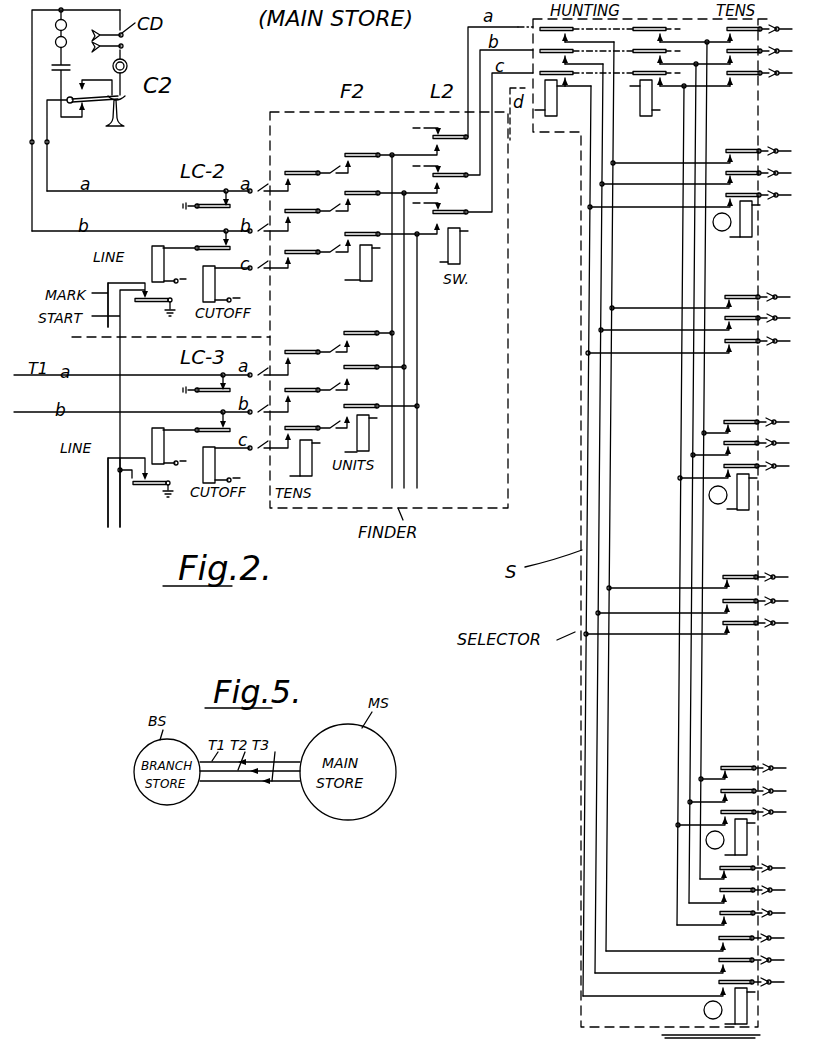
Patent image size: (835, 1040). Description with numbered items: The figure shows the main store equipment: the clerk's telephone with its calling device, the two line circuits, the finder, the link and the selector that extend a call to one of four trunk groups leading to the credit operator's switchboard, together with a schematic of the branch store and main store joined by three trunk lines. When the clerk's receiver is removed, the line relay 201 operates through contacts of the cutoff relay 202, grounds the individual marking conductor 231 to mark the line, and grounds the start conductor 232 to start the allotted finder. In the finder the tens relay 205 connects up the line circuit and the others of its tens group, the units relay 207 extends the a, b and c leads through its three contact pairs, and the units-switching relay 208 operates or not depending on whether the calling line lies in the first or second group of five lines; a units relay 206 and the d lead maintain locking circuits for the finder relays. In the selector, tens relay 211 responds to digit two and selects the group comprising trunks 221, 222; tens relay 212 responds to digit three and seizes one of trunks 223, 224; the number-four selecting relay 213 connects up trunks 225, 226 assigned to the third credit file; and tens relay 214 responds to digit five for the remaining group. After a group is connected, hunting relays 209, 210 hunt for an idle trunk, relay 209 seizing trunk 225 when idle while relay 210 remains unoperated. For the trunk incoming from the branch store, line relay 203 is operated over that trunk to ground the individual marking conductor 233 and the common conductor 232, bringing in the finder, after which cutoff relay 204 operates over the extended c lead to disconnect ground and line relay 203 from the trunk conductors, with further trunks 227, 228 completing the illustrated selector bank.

The line relay 201 is at (152, 270).
The cutoff relay 202 is at (203, 280).
The line relay 203 is at (152, 428).
The cutoff relay 204 is at (203, 462).
The tens relay 205 is at (312, 476).
The units relay 206 is at (363, 440).
The units relay 207 is at (360, 262).
The units-switching relay 208 is at (460, 250).
The hunting relay 209 is at (565, 120).
The hunting relay 210 is at (648, 112).
The tens relay 211 is at (742, 237).
The tens relay 212 is at (740, 509).
The tens relay 213 is at (735, 848).
The tens relay 214 is at (735, 1018).
The trunk 221 is at (789, 27).
The trunk 222 is at (790, 148).
The trunk 223 is at (790, 293).
The trunk 224 is at (790, 419).
The trunk 225 is at (690, 602).
The trunk 226 is at (788, 763).
The selector contact set 227 is at (788, 863).
The selector contact set 228 is at (788, 933).
The individual marking conductor 231 is at (108, 323).
The start conductor 232 is at (120, 378).
The individual marking conductor 233 is at (108, 505).